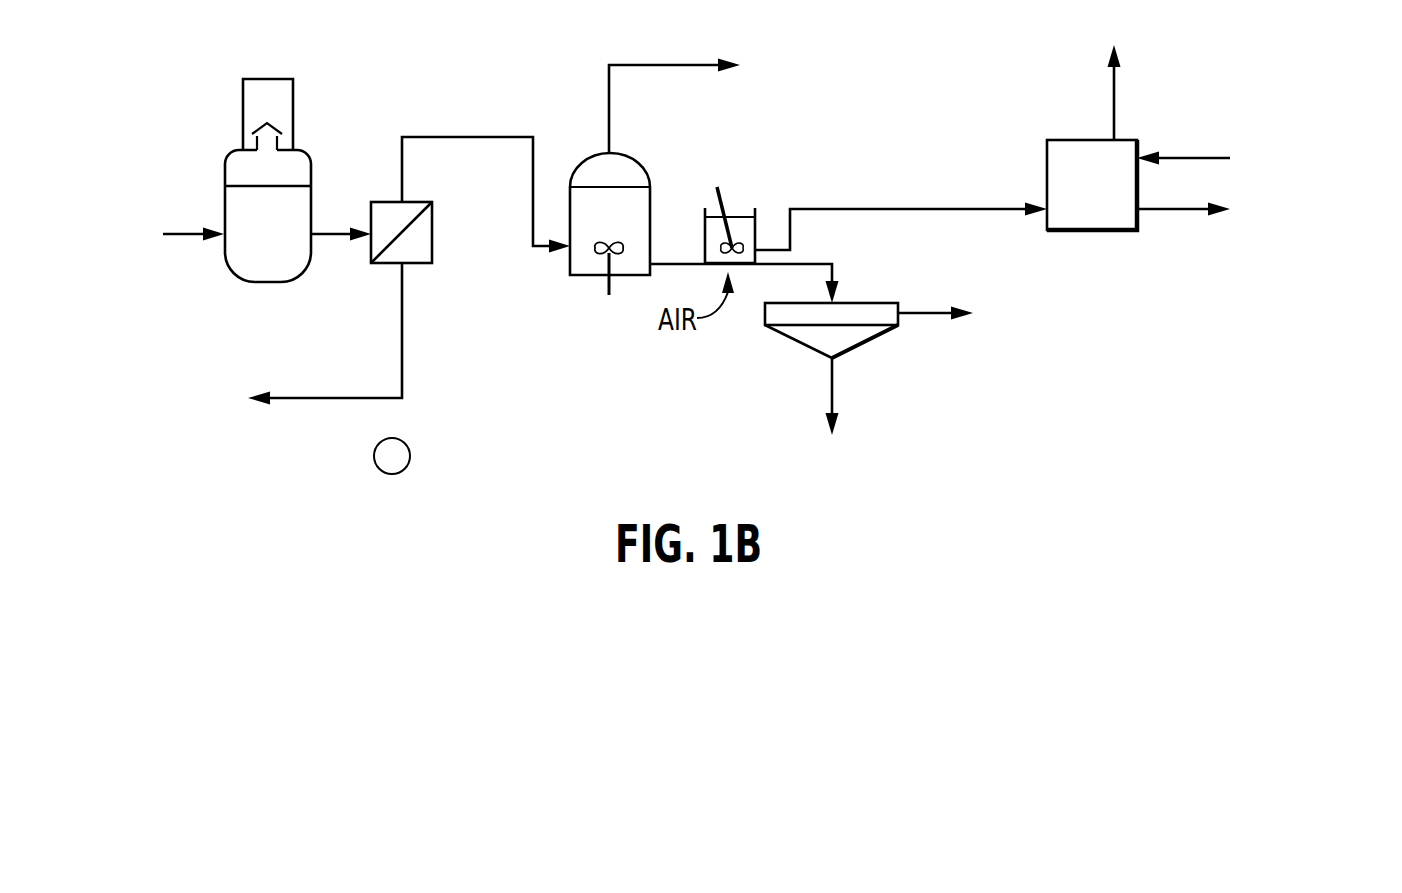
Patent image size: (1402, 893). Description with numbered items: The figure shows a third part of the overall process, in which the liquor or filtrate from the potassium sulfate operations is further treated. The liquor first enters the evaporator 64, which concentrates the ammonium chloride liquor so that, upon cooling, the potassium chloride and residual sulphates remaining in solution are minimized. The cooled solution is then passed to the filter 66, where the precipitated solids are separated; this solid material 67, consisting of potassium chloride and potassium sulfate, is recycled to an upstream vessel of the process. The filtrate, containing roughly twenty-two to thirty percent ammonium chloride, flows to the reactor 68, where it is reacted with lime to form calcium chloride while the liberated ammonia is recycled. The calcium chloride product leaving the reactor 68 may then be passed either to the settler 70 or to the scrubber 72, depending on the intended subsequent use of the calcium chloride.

The evaporator 64 is at (238, 278).
The filter 66 is at (433, 241).
The solid material 67 is at (287, 397).
The reactor 68 is at (651, 198).
The settler 70 is at (1047, 158).
The scrubber 72 is at (797, 343).